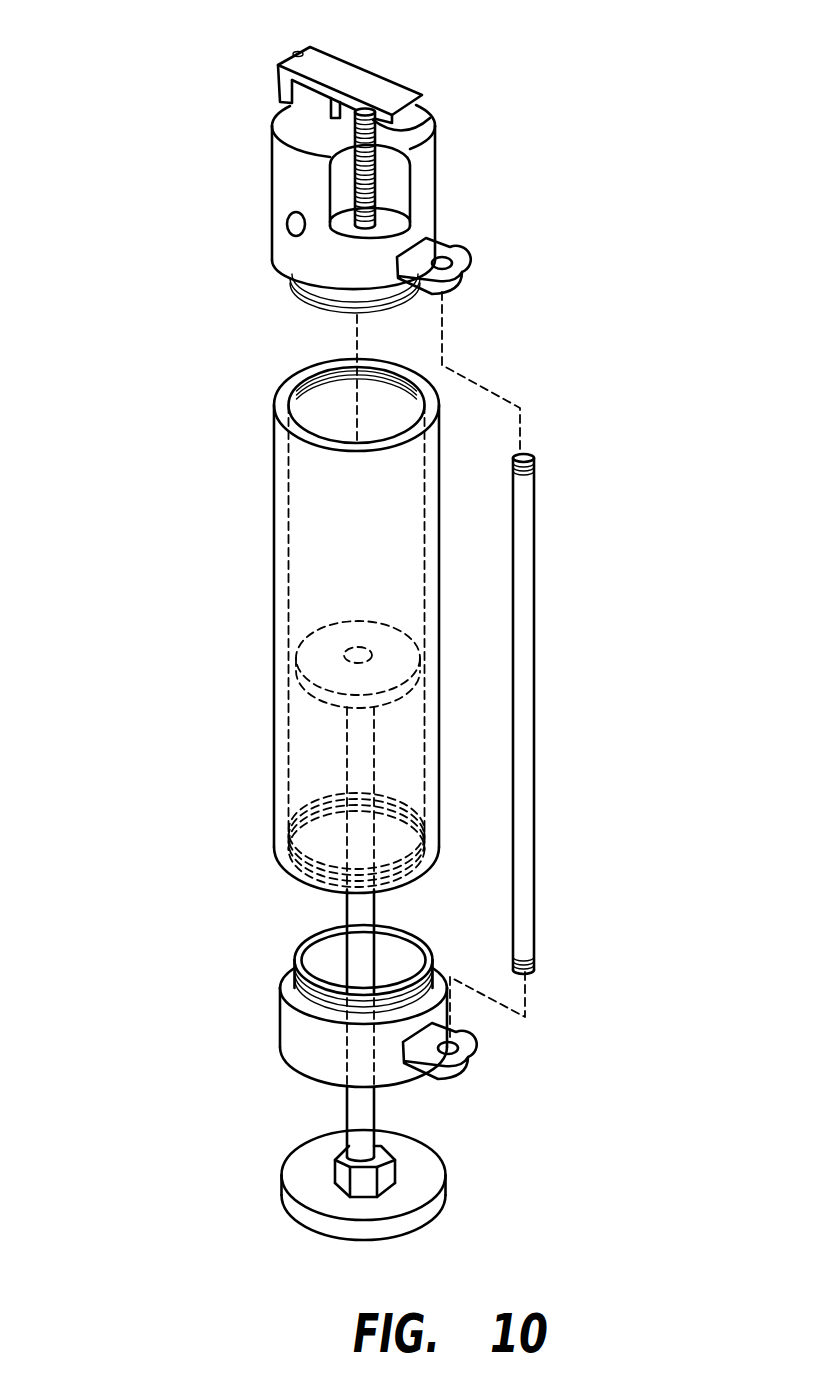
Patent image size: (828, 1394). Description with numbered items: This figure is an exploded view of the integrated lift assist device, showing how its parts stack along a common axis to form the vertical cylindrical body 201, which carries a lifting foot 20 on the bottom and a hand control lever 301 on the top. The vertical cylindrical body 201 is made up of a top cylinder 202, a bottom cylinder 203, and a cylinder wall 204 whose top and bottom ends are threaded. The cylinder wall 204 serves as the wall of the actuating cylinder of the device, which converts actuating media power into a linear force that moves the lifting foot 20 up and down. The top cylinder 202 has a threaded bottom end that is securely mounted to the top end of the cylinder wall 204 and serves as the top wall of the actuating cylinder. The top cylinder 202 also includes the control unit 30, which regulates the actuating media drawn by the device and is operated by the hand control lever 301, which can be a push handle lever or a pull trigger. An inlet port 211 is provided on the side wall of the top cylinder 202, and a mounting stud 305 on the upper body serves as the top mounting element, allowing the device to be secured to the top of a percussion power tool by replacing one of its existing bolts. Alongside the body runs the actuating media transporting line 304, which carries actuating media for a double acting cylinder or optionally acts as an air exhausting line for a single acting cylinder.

The lifting foot 20 is at (440, 1190).
The control unit 30 is at (595, 81).
The vertical cylindrical body 201 is at (175, 1227).
The top cylinder 202 is at (468, 233).
The bottom cylinder 203 is at (277, 1010).
The cylinder wall 204 is at (273, 627).
The inlet port 211 is at (290, 223).
The hand control lever 301 is at (410, 110).
The actuating media transporting line 304 is at (533, 710).
The mounting stud 305 is at (380, 150).